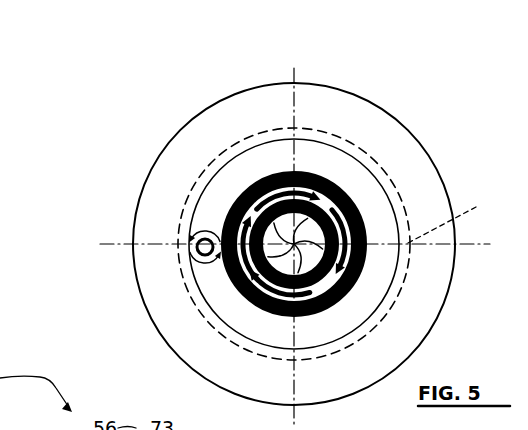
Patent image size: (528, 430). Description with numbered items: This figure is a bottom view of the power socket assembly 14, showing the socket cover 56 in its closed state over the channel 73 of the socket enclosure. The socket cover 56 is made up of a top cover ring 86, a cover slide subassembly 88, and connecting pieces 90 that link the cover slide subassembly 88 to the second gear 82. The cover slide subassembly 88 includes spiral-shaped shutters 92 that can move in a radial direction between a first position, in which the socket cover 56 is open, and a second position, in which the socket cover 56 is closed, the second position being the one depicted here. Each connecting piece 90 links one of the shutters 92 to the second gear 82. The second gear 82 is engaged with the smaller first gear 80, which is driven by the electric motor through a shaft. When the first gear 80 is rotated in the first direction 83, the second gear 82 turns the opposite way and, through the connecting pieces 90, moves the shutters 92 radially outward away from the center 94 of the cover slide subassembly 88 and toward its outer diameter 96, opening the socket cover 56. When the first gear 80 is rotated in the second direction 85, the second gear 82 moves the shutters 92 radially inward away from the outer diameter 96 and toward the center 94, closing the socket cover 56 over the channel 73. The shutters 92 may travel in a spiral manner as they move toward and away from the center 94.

The power socket assembly 14 is at (110, 83).
The socket cover 56 is at (157, 140).
The channel 73 is at (455, 218).
The first gear 80 is at (198, 253).
The second gear 82 is at (352, 197).
The first direction 83 is at (190, 292).
The second direction 85 is at (190, 225).
The top cover ring 86 is at (378, 203).
The cover slide subassembly 88 is at (358, 278).
The connecting pieces 90 is at (308, 190).
The spiral-shaped shutters 92 is at (335, 185).
The center 94 is at (333, 297).
The outer diameter 96 is at (268, 190).